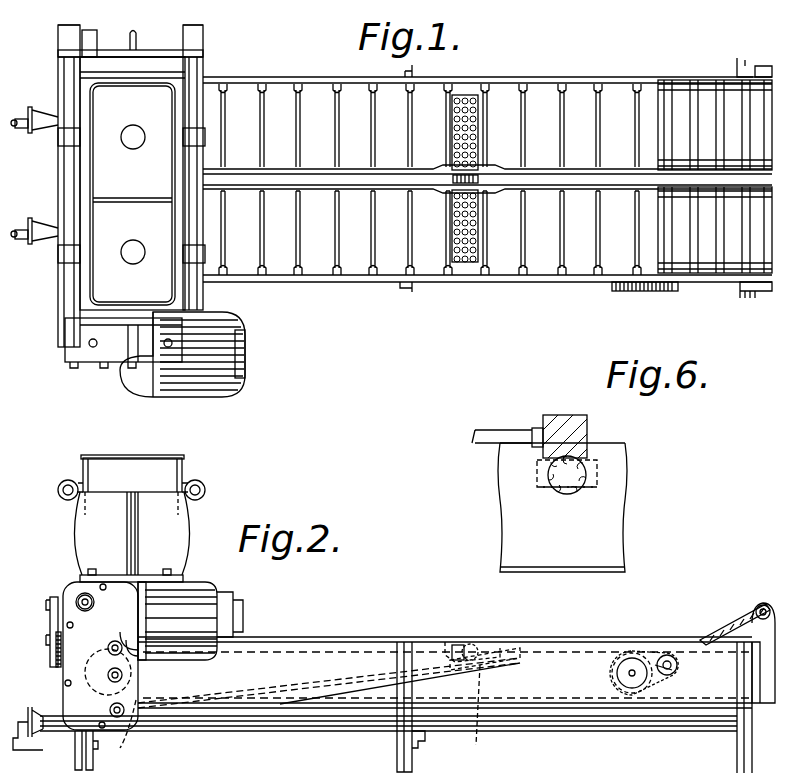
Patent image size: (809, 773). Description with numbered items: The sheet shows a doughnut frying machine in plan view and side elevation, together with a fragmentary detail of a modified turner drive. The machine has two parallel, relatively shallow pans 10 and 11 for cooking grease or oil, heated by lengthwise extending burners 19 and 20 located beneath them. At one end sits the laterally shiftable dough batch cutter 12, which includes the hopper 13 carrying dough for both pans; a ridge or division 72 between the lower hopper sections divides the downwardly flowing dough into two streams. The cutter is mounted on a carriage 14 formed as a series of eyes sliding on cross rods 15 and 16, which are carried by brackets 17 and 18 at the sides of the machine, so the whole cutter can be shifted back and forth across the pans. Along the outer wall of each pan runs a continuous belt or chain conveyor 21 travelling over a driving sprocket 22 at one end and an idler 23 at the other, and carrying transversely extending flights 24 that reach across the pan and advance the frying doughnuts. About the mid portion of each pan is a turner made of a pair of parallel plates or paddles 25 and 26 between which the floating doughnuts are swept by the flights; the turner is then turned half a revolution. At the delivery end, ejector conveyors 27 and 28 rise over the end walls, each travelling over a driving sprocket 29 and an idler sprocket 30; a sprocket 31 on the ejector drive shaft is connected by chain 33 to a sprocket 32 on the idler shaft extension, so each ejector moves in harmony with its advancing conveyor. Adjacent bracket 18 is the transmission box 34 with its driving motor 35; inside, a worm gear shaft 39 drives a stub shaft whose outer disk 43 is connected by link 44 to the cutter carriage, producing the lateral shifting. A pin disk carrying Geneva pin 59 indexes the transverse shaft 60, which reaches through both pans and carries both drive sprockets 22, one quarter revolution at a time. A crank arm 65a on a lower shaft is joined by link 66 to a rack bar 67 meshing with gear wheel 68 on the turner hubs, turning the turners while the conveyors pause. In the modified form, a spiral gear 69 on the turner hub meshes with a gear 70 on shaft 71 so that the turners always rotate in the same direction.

In FIG. 1, the pan 10 is at (320, 270).
In FIG. 2, the pan 10 is at (316, 660).
In FIG. 1, the pan 11 is at (317, 108).
In FIG. 6, the pan 11 is at (515, 500).
In FIG. 1, the dough batch cutter 12 is at (82, 290).
In FIG. 2, the dough batch cutter 12 is at (80, 472).
In FIG. 1, the hopper 13 is at (115, 181).
In FIG. 2, the hopper 13 is at (150, 445).
In FIG. 1, the carriage 14 is at (206, 137).
In FIG. 1, the cross rod 15 is at (64, 88).
In FIG. 2, the cross rod 15 is at (58, 495).
In FIG. 1, the cross rod 16 is at (193, 70).
In FIG. 2, the cross rod 16 is at (205, 487).
In FIG. 1, the bracket 17 is at (150, 68).
In FIG. 1, the bracket 18 is at (105, 352).
In FIG. 2, the bracket 18 is at (102, 535).
In FIG. 1, the burner 19 is at (40, 222).
In FIG. 2, the burner 19 is at (44, 742).
In FIG. 1, the burner 20 is at (40, 112).
In FIG. 2, the conveyor 21 is at (373, 652).
In FIG. 2, the driving sprocket 22 is at (85, 677).
In FIG. 2, the idler 23 is at (612, 668).
In FIG. 1, the flights 24 is at (560, 97).
In FIG. 1, the turner plate 25 is at (459, 95).
In FIG. 6, the turner plate 25 is at (597, 461).
In FIG. 2, the turner plate 25 is at (488, 645).
In FIG. 6, the turner plate 26 is at (597, 486).
In FIG. 2, the turner plate 26 is at (446, 645).
In FIG. 1, the ejector conveyor 27 is at (700, 250).
In FIG. 2, the ejector conveyor 27 is at (734, 620).
In FIG. 1, the ejector conveyor 28 is at (694, 100).
In FIG. 2, the driving sprocket 29 is at (670, 655).
In FIG. 2, the idler sprocket 30 is at (766, 604).
In FIG. 2, the sprocket 31 is at (675, 676).
In FIG. 2, the sprocket 32 is at (617, 678).
In FIG. 1, the chain 33 is at (647, 293).
In FIG. 2, the chain 33 is at (655, 653).
In FIG. 2, the transmission box 34 is at (100, 656).
In FIG. 1, the driving motor 35 is at (178, 398).
In FIG. 2, the driving motor 35 is at (200, 610).
In FIG. 2, the shaft 39 is at (78, 600).
In FIG. 2, the disk 43 is at (55, 655).
In FIG. 2, the link 44 is at (50, 622).
In FIG. 2, the Geneva pin 59 is at (71, 590).
In FIG. 2, the shaft 60 is at (110, 680).
In FIG. 2, the crank arm 65a is at (124, 736).
In FIG. 2, the link 66 is at (185, 715).
In FIG. 2, the rack bar 67 is at (485, 718).
In FIG. 1, the gear wheel 68 is at (452, 179).
In FIG. 2, the gear wheel 68 is at (462, 644).
In FIG. 6, the spiral gear 69 is at (565, 484).
In FIG. 6, the gear 70 is at (588, 436).
In FIG. 6, the shaft 71 is at (496, 434).
In FIG. 1, the ridge 72 is at (143, 200).